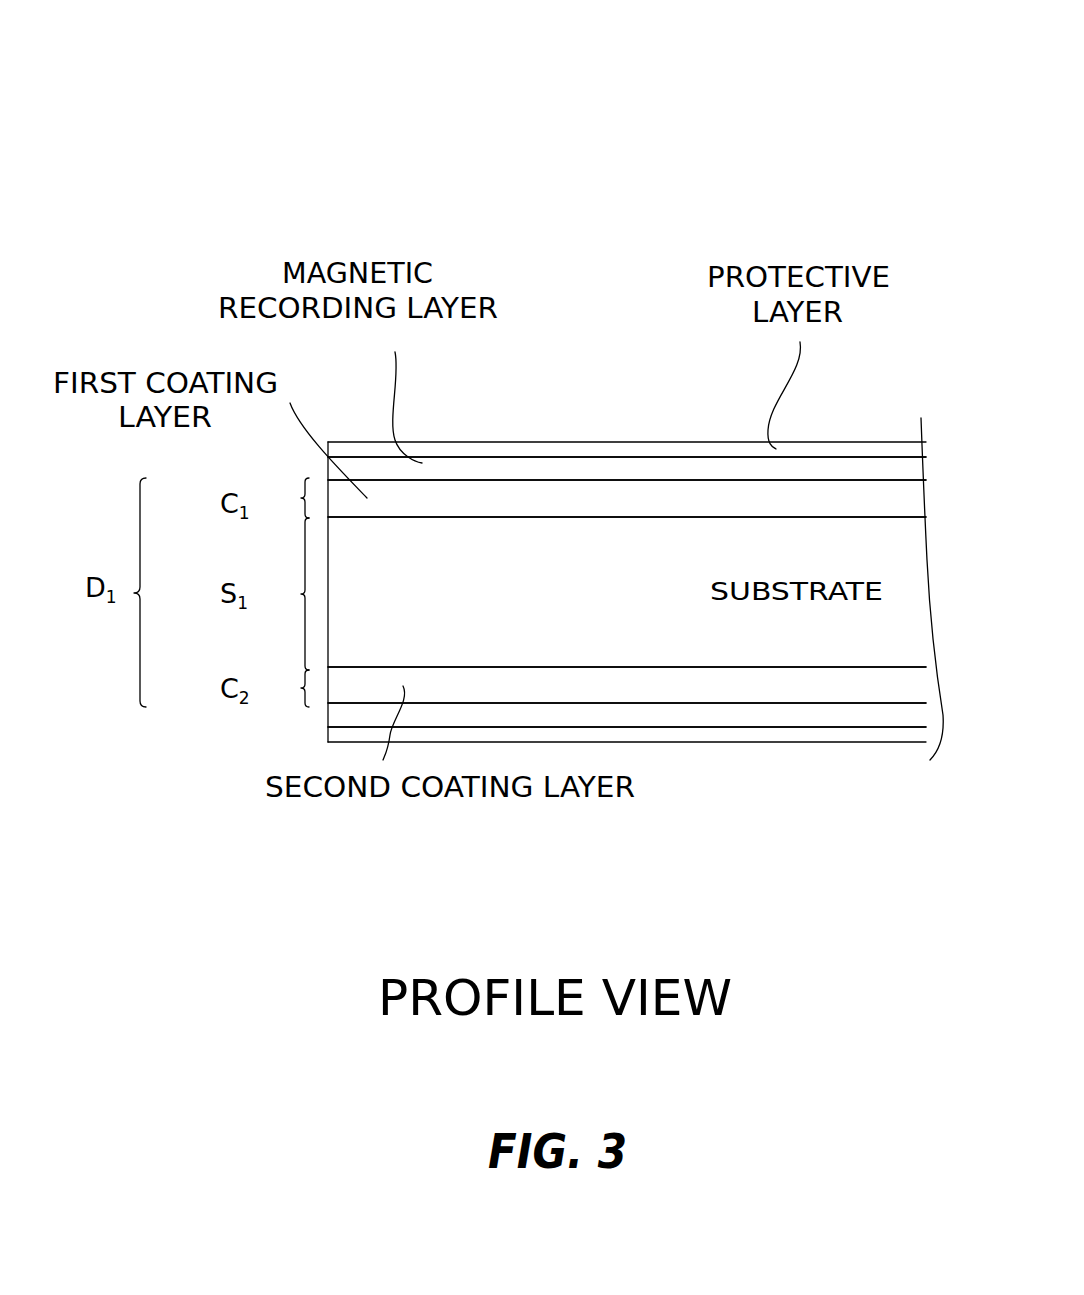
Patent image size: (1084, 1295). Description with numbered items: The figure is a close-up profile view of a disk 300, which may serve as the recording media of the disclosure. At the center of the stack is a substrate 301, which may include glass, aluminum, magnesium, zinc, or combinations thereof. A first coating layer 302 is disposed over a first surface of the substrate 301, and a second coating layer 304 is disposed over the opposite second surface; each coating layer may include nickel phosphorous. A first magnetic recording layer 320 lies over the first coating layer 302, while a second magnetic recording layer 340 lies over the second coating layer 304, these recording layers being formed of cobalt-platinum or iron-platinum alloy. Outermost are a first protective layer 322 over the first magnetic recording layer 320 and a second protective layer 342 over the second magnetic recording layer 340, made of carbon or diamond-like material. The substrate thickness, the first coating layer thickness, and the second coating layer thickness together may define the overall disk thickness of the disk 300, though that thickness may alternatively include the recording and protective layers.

The disk 300 is at (563, 157).
The substrate 301 is at (638, 603).
The first coating layer 302 is at (638, 508).
The second coating layer 304 is at (638, 698).
The first magnetic recording layer 320 is at (527, 467).
The first protective layer 322 is at (710, 449).
The second magnetic recording layer 340 is at (667, 717).
The second protective layer 342 is at (790, 737).